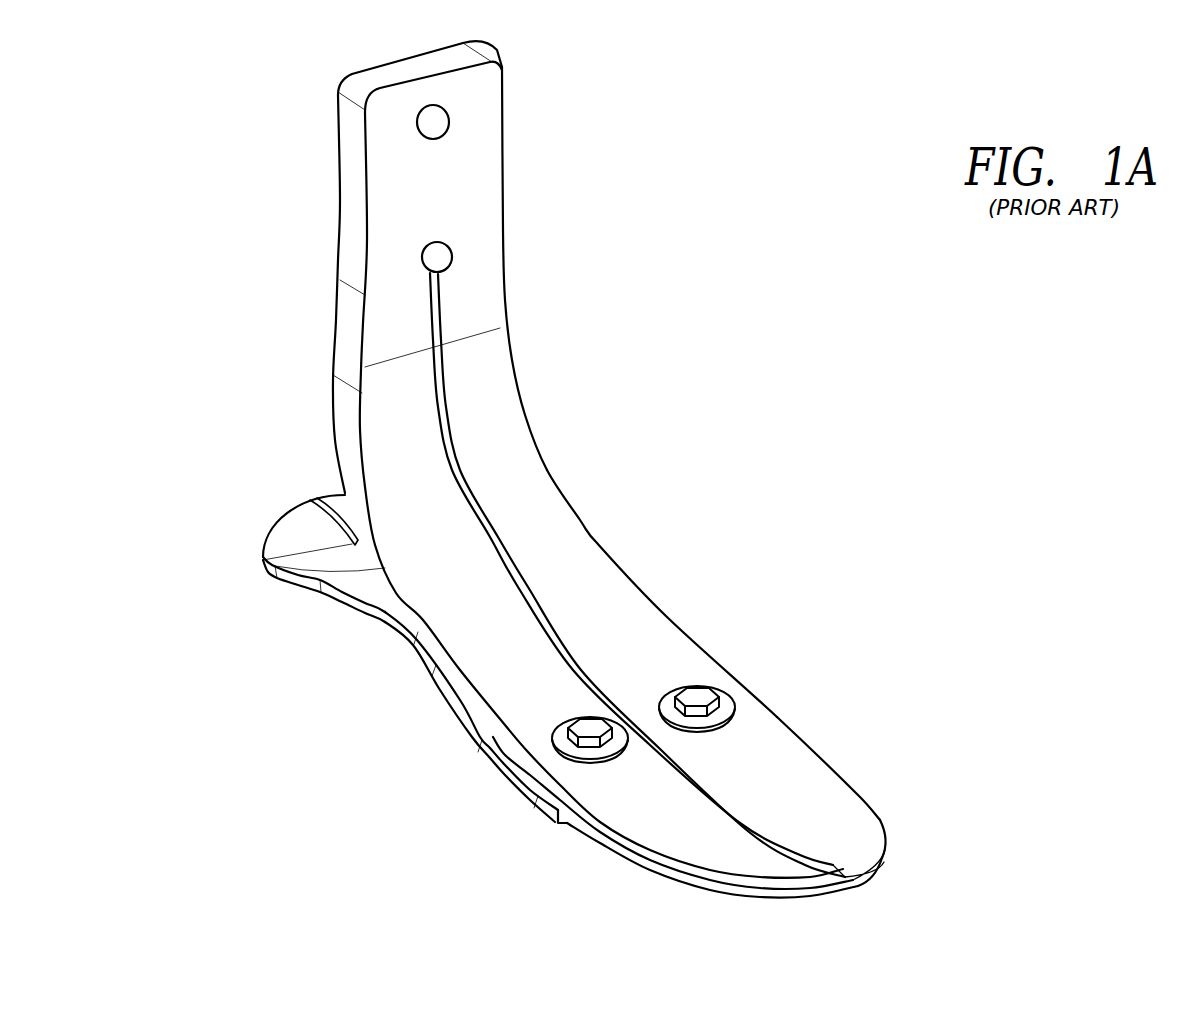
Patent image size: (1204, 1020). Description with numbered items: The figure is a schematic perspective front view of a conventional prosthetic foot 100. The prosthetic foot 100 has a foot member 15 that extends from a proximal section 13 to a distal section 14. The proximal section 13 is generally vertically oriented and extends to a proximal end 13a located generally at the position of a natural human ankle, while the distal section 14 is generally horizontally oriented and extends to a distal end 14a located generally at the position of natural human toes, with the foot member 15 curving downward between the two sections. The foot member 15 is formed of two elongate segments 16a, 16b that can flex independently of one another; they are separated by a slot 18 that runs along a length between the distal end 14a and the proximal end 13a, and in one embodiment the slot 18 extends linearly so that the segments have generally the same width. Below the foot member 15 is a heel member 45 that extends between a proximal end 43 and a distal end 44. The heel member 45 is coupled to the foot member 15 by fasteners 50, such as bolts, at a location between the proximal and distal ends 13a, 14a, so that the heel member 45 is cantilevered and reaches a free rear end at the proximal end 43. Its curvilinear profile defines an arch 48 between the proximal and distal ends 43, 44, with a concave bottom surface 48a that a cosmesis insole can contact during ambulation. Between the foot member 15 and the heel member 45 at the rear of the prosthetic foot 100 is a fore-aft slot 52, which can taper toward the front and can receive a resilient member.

The prosthetic foot 100 is at (772, 320).
The proximal section 13 is at (313, 145).
The proximal end 13a is at (321, 68).
The distal section 14 is at (810, 728).
The distal end 14a is at (885, 875).
The foot member 15 is at (706, 583).
The elongate segment 16a is at (700, 832).
The elongate segment 16b is at (812, 787).
The slot 18 is at (520, 590).
The proximal end 43 is at (259, 531).
The distal end 44 is at (555, 840).
The heel member 45 is at (303, 607).
The arch 48 is at (370, 633).
The bottom surface 48a is at (418, 655).
The fasteners 50 is at (704, 690).
The slot 52 is at (343, 565).